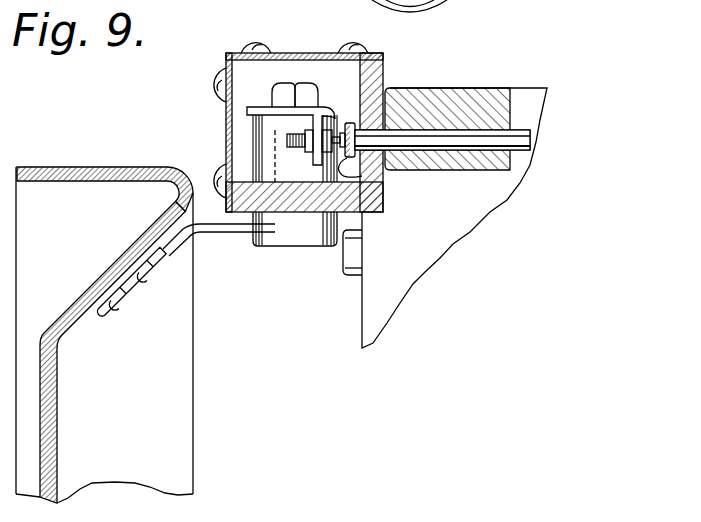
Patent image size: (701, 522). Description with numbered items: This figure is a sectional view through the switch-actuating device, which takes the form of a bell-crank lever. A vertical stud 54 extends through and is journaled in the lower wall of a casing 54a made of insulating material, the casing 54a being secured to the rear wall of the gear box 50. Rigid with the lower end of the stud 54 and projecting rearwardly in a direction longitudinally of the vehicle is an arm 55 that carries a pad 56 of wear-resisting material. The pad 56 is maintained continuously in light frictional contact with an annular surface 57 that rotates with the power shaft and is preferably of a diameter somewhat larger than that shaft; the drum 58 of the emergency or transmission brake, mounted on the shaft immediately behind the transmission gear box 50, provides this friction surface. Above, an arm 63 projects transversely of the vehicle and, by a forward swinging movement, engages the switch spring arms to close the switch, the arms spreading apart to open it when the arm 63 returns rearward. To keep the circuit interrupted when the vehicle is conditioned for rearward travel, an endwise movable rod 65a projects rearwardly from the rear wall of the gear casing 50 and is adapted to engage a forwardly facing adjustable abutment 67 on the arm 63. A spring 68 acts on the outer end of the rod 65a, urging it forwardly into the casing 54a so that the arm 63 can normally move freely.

The gear box 50 is at (371, 293).
The vertical stud 54 is at (275, 156).
The casing 54a is at (384, 75).
The arm 55 is at (184, 238).
The pad 56 is at (128, 280).
The annular surface 57 is at (156, 231).
The drum 58 is at (88, 168).
The arm 63 is at (262, 107).
The endwise movable rod 65a is at (523, 131).
The adjustable abutment 67 is at (333, 130).
The spring 68 is at (362, 176).